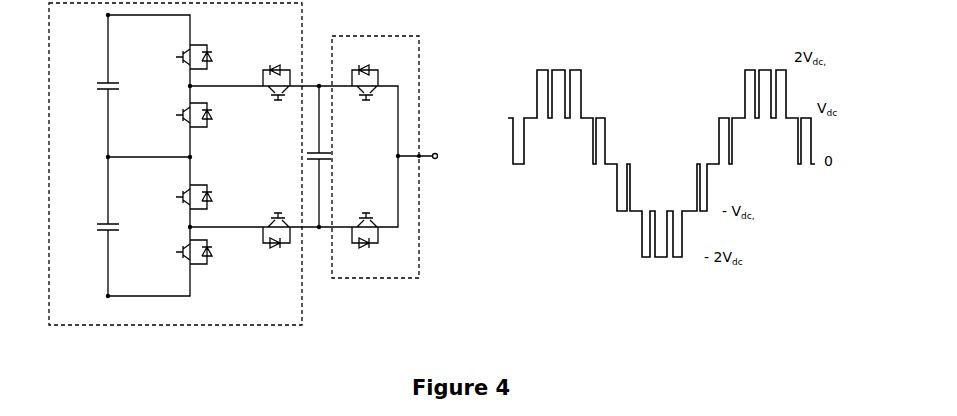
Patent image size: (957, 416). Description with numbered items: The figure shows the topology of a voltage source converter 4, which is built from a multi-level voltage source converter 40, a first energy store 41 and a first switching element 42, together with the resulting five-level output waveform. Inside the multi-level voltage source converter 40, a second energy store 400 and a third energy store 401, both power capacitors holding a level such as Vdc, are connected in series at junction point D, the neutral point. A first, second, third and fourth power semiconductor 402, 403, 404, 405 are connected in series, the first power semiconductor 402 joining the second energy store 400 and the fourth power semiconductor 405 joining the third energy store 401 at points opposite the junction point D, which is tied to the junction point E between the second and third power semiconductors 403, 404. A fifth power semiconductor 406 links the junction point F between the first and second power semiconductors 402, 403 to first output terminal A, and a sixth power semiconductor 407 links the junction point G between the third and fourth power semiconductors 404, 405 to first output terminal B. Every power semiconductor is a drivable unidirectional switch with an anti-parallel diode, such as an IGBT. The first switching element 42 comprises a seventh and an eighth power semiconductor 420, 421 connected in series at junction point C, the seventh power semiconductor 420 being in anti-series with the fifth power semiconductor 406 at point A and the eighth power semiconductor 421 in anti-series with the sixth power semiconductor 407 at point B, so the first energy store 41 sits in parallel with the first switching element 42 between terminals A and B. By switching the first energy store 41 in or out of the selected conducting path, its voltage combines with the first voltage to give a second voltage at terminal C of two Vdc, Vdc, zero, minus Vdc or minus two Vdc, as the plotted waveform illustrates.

The voltage source converter 4 is at (252, 181).
The multi-level voltage source converter 40 is at (184, 164).
The first energy store 41 is at (329, 156).
The first switching element 42 is at (382, 157).
The second energy store 400 is at (92, 71).
The third energy store 401 is at (92, 242).
The first power semiconductor 402 is at (199, 48).
The second power semiconductor 403 is at (199, 122).
The third power semiconductor 404 is at (199, 189).
The fourth power semiconductor 405 is at (201, 268).
The fifth power semiconductor 406 is at (266, 93).
The sixth power semiconductor 407 is at (266, 222).
The seventh power semiconductor 420 is at (379, 78).
The eighth power semiconductor 421 is at (379, 230).